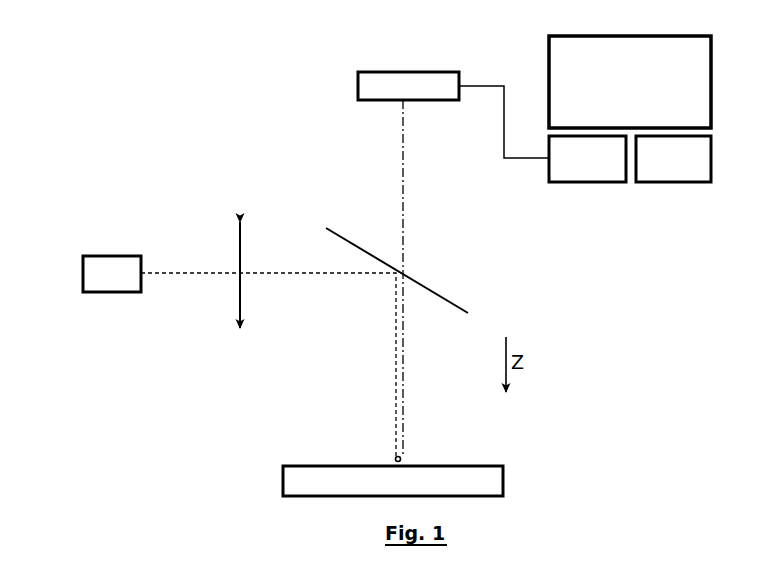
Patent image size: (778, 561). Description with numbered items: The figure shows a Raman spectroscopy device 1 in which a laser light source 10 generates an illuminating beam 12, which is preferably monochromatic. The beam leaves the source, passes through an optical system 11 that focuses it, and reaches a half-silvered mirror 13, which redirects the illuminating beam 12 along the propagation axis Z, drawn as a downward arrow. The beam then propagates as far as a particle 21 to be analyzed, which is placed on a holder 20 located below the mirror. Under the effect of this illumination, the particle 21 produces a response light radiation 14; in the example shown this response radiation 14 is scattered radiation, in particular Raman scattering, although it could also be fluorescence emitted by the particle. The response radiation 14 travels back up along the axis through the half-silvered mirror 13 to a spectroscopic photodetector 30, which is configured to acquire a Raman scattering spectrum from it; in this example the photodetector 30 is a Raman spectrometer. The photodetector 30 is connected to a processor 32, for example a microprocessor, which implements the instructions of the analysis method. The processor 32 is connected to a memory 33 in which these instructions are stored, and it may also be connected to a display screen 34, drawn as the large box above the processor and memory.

The device 1 is at (176, 86).
The laser light source 10 is at (106, 272).
The optical system 11 is at (246, 316).
The illuminating beam 12 is at (286, 277).
The half-silvered mirror 13 is at (432, 287).
The response light radiation 14 is at (406, 164).
The holder 20 is at (298, 479).
The particle 21 is at (389, 462).
The spectroscopic photodetector 30 is at (371, 87).
The processor 32 is at (577, 162).
The memory 33 is at (687, 163).
The display screen 34 is at (566, 58).